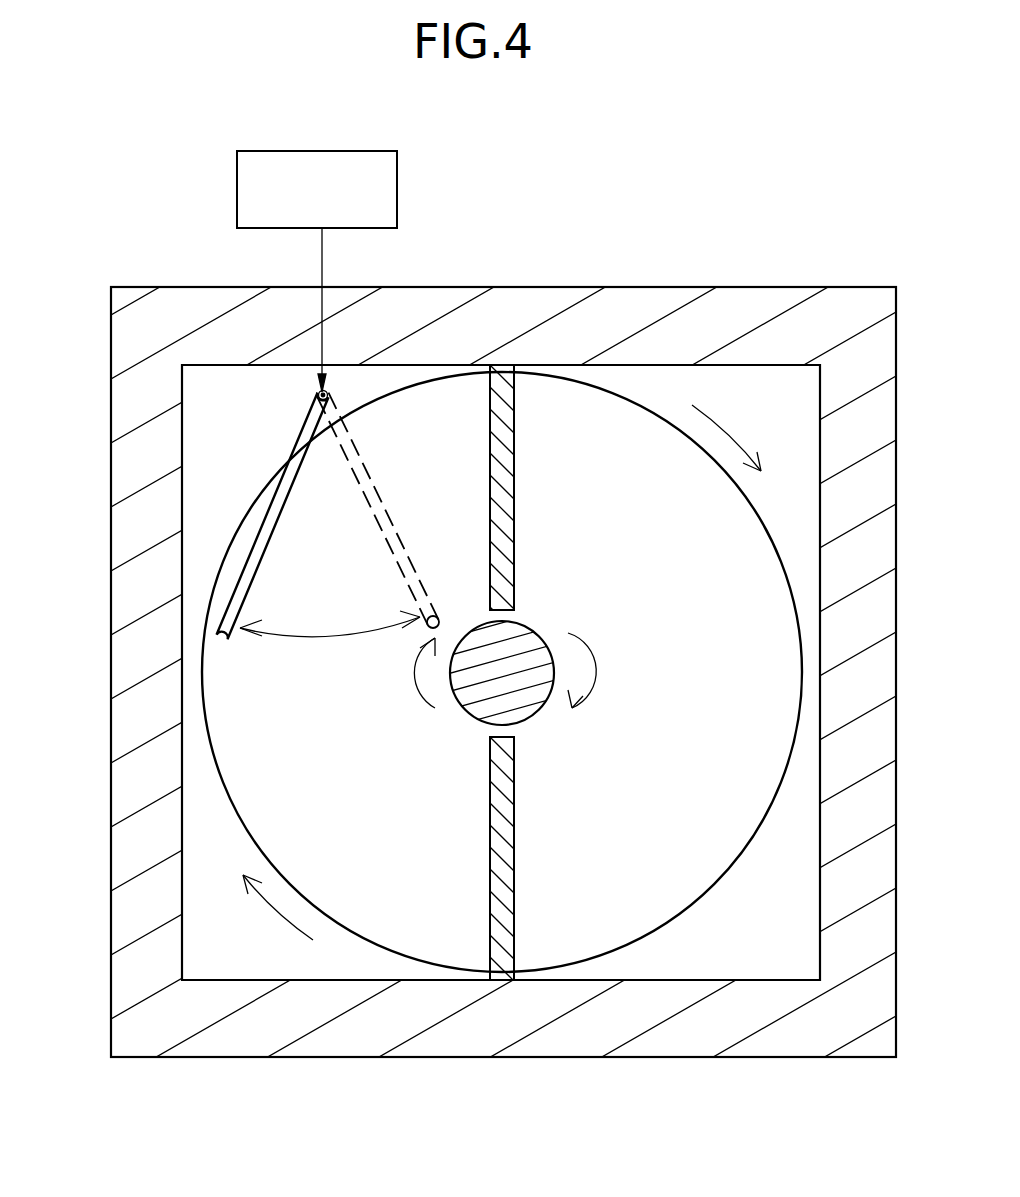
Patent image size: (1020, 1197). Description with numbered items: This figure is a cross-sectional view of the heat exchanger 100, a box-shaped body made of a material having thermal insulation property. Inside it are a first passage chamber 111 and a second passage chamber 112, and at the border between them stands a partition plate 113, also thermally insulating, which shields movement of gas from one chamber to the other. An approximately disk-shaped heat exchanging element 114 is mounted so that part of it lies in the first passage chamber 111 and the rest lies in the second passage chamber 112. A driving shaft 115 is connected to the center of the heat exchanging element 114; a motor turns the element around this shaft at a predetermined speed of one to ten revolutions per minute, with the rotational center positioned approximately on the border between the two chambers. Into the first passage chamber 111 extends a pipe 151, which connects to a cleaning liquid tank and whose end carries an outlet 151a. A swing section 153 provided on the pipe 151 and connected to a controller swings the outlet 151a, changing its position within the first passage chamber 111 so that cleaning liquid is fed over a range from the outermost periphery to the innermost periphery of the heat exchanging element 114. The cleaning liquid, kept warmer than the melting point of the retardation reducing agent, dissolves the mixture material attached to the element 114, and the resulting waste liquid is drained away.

The heat exchanger 100 is at (697, 287).
The first passage chamber 111 is at (246, 959).
The second passage chamber 112 is at (772, 952).
The partition plate 113 is at (504, 366).
The heat exchanging element 114 is at (650, 912).
The driving shaft 115 is at (523, 702).
The pipe 151 is at (268, 503).
The outlet 151a is at (220, 637).
The swing section 153 is at (237, 196).